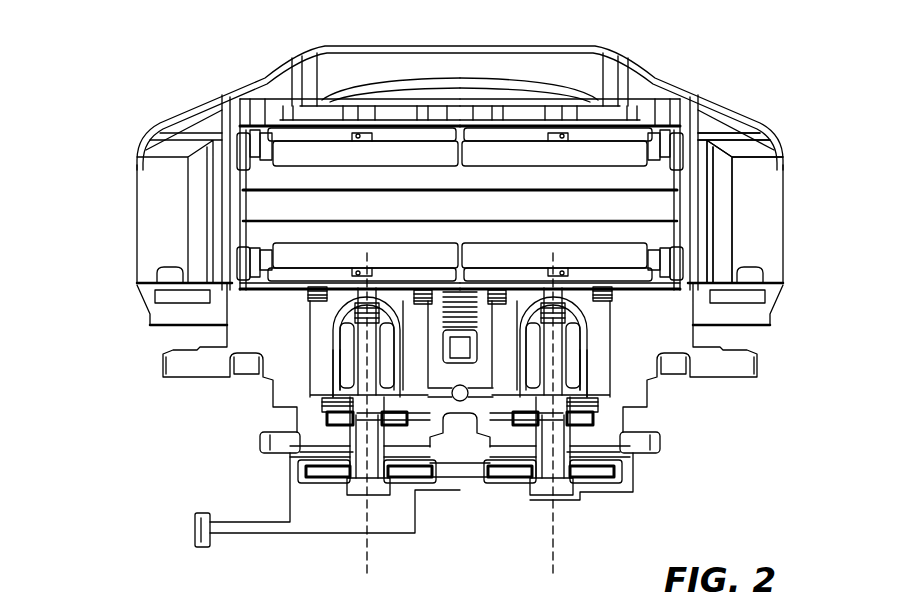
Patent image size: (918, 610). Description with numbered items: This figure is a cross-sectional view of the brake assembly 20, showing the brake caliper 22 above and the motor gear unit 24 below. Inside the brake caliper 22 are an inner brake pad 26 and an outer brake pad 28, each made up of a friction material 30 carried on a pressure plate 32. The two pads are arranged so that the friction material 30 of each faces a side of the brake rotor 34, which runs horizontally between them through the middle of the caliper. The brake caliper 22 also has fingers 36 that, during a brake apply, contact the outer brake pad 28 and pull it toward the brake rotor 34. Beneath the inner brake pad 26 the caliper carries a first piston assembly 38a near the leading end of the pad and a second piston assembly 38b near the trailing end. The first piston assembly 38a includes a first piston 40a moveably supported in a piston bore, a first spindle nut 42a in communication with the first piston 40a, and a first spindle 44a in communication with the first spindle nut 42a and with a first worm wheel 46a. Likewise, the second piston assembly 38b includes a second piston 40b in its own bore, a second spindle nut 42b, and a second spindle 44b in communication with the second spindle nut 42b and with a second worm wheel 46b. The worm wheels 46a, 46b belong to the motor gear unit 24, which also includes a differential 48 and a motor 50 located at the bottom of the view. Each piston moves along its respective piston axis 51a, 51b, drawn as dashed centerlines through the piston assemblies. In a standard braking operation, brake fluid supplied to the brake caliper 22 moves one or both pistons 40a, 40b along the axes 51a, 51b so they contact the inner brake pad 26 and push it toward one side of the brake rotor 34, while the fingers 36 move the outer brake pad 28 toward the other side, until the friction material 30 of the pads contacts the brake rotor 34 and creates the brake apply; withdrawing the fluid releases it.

The brake assembly 20 is at (152, 85).
The brake caliper 22 is at (793, 204).
The motor gear unit 24 is at (622, 514).
The inner brake pad 26 is at (313, 249).
The outer brake pad 28 is at (345, 153).
The friction material 30 is at (378, 165).
The pressure plate 32 is at (593, 134).
The brake rotor 34 is at (490, 216).
The fingers 36 is at (306, 100).
The first piston assembly 38a is at (303, 339).
The second piston assembly 38b is at (620, 339).
The first piston 40a is at (328, 350).
The second piston 40b is at (595, 350).
The first spindle nut 42a is at (353, 364).
The second spindle nut 42b is at (573, 363).
The first spindle 44a is at (353, 402).
The second spindle 44b is at (595, 402).
The first worm wheel 46a is at (310, 472).
The second worm wheel 46b is at (617, 472).
The differential 48 is at (459, 466).
The motor 50 is at (410, 520).
The first piston axis 51a is at (366, 553).
The second piston axis 51b is at (554, 553).